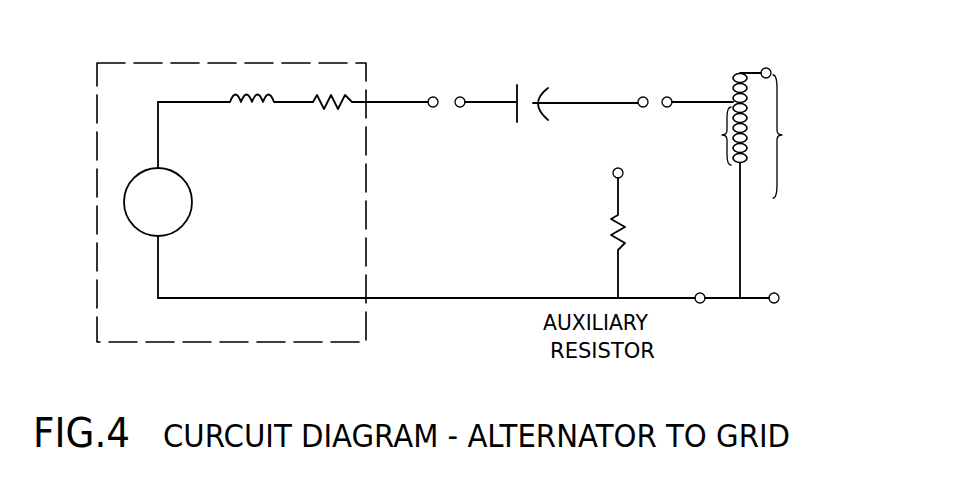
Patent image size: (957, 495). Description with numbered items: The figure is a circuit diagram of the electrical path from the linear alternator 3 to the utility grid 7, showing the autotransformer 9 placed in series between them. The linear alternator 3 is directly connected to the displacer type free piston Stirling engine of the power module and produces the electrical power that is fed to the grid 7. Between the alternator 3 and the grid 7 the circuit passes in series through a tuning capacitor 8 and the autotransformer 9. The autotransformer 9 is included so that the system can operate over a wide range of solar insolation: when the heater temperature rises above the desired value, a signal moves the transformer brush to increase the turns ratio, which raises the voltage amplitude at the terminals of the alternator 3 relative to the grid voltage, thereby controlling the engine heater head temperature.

The linear alternator 3 is at (327, 342).
The utility grid 7 is at (827, 218).
The tuning capacitor 8 is at (538, 88).
The autotransformer 9 is at (741, 62).